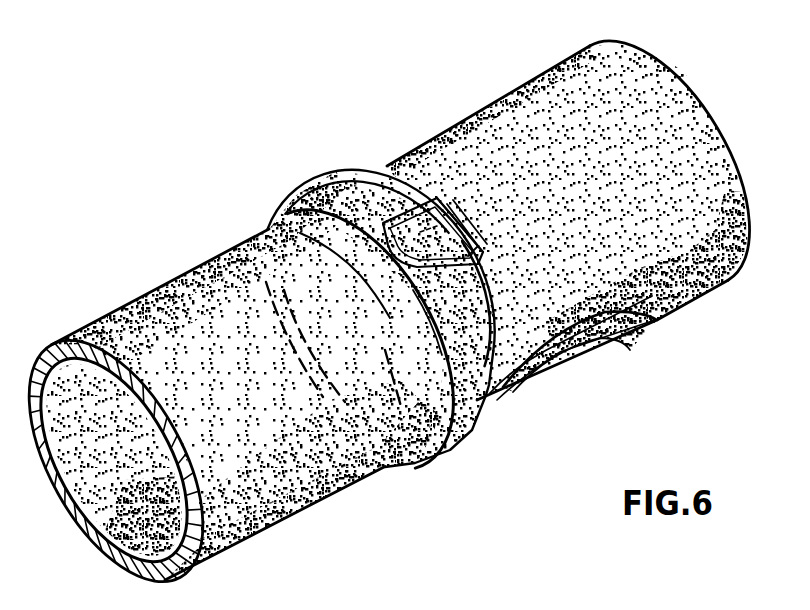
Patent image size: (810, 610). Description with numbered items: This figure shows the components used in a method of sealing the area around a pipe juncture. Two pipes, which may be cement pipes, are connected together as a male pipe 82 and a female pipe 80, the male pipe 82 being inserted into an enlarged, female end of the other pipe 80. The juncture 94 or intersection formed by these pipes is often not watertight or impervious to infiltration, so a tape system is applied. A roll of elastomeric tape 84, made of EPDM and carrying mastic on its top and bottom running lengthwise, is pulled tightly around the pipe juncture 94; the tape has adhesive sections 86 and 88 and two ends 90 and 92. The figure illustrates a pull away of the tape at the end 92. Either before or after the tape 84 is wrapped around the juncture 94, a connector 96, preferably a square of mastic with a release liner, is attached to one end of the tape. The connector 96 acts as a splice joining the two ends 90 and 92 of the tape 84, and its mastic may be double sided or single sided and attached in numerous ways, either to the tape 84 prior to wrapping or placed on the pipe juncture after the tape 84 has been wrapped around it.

The female pipe 80 is at (318, 497).
The male pipe 82 is at (722, 288).
The tape 84 is at (344, 176).
The adhesive section 86 is at (618, 347).
The adhesive section 88 is at (657, 322).
The tape end 90 is at (594, 366).
The tape end 92 is at (390, 193).
The pipe juncture 94 is at (462, 286).
The connector 96 is at (464, 254).